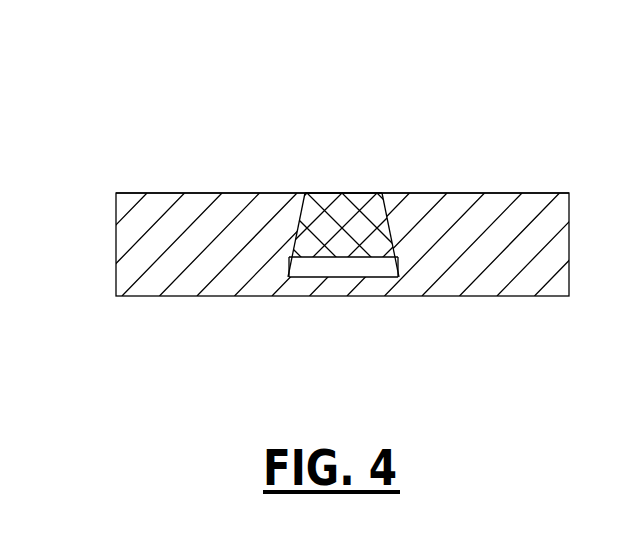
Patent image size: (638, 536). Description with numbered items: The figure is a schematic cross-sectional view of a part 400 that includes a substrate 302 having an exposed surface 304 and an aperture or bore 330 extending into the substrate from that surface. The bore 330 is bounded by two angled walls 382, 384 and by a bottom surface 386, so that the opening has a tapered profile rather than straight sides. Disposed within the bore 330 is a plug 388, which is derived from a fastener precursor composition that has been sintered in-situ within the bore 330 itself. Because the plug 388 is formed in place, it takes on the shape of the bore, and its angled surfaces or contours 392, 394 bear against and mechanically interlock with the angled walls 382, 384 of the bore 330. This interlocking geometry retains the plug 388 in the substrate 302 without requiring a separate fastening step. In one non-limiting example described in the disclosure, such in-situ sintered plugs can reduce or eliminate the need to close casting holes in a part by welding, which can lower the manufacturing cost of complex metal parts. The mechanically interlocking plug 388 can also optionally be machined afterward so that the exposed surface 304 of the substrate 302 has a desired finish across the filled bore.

The part 400 is at (124, 70).
The substrate 302 is at (121, 246).
The exposed surface 304 is at (172, 193).
The bore 330 is at (343, 166).
The angled wall 382 is at (291, 278).
The angled wall 384 is at (397, 272).
The bottom surface 386 is at (355, 278).
The plug 388 is at (315, 193).
The angled surface of plug 392 is at (297, 248).
The angled surface of plug 394 is at (387, 230).